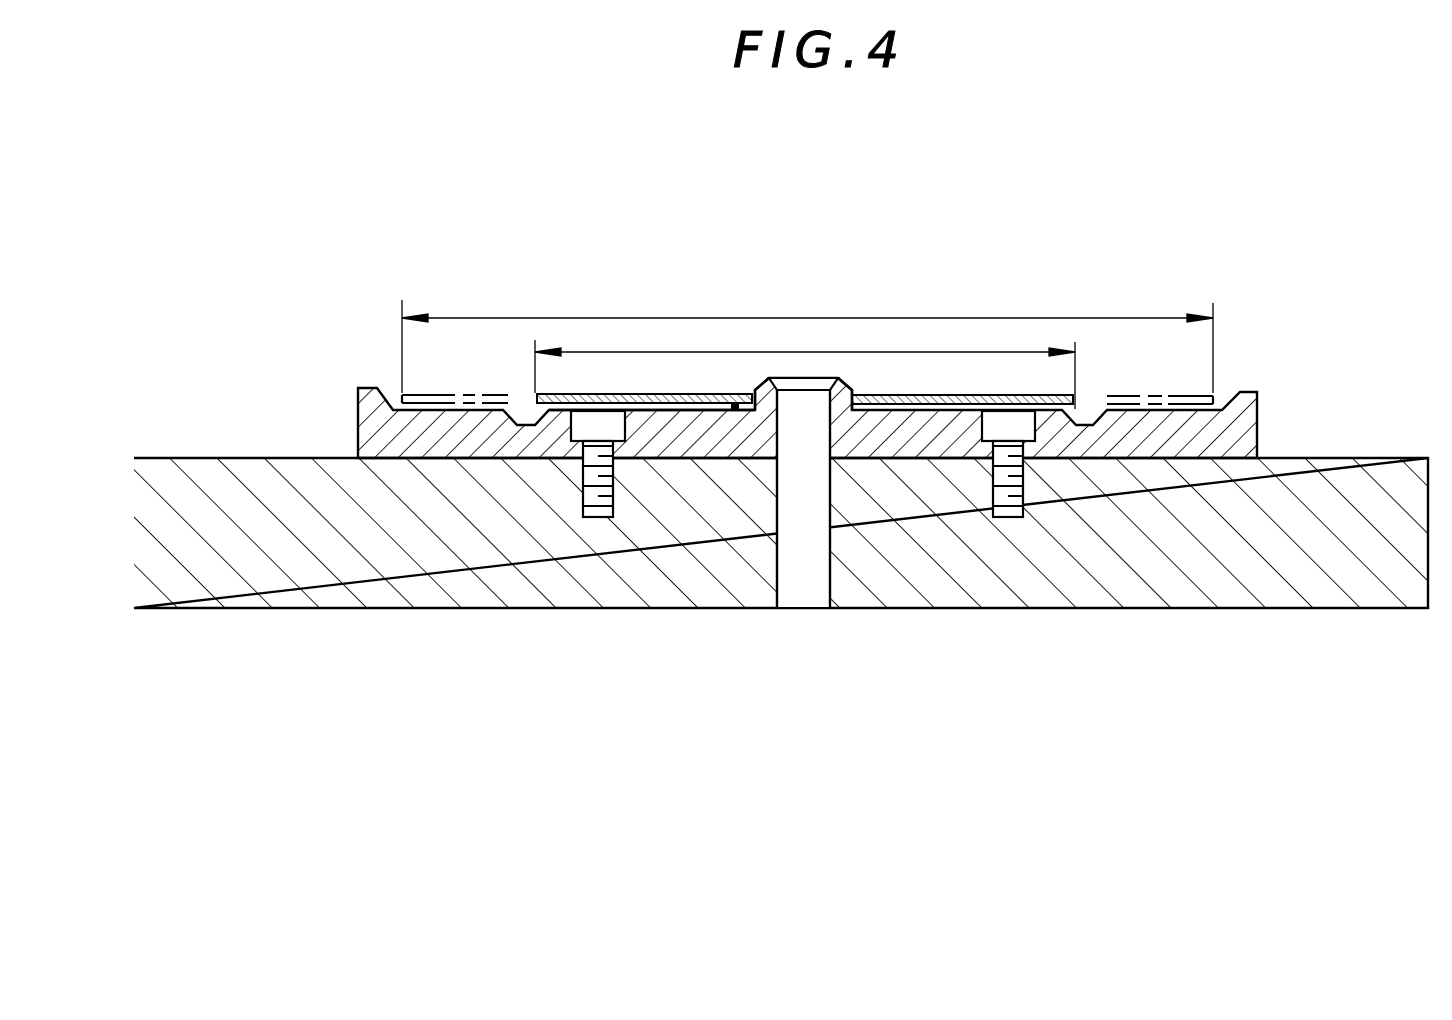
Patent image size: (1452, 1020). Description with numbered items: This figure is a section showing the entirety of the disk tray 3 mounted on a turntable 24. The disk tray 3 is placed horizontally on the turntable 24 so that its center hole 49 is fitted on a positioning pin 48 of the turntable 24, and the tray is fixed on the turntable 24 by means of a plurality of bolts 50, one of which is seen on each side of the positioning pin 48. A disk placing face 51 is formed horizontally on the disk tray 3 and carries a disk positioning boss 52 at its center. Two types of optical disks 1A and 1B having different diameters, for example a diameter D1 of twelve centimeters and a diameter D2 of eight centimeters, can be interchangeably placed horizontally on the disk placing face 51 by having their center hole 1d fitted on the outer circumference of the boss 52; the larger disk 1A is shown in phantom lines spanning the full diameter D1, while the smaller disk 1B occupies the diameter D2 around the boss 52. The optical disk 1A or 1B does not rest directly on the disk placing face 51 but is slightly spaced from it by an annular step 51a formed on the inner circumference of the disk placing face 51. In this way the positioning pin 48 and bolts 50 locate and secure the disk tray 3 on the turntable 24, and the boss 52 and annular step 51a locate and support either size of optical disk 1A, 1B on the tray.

The optical disk 1A is at (477, 395).
The optical disk 1B is at (700, 393).
The center hole 1d is at (847, 388).
The disk tray 3 is at (910, 396).
The turntable 24 is at (462, 550).
The positioning pin 48 is at (801, 544).
The center hole 49 is at (817, 391).
The bolt 50 is at (598, 517).
The disk placing face 51 is at (1132, 410).
The annular step 51a is at (735, 410).
The disk positioning boss 52 is at (762, 390).
The diameter of optical disk 1A D1 is at (1108, 318).
The diameter of optical disk 1B D2 is at (995, 352).